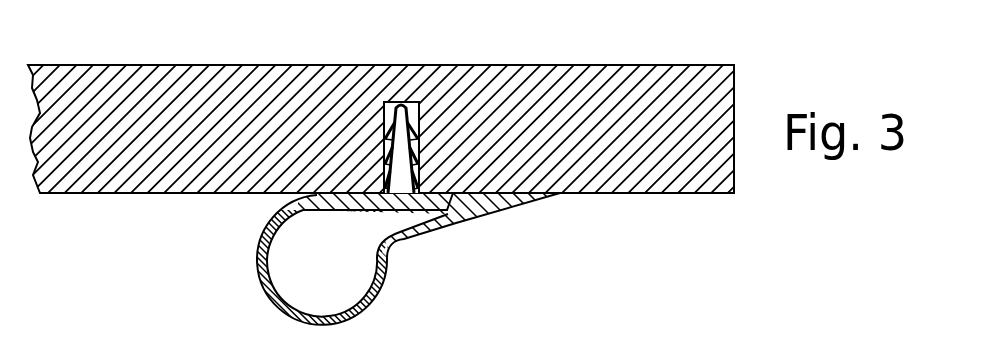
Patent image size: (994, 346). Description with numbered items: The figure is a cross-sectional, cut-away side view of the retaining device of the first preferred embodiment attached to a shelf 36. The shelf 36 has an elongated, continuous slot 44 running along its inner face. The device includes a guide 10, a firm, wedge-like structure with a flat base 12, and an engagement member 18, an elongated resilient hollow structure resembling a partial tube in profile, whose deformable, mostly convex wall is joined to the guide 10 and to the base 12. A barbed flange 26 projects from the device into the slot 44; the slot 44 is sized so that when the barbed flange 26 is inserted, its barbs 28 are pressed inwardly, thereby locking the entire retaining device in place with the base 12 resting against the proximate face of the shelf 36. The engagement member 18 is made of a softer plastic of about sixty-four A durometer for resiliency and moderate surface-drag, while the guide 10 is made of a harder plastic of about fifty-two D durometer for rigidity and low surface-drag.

The guide 10 is at (460, 222).
The base 12 is at (378, 192).
The engagement member 18 is at (283, 312).
The barbed flange 26 is at (400, 102).
The barbs 28 is at (417, 144).
The shelf 36 is at (620, 193).
The slot 44 is at (395, 104).